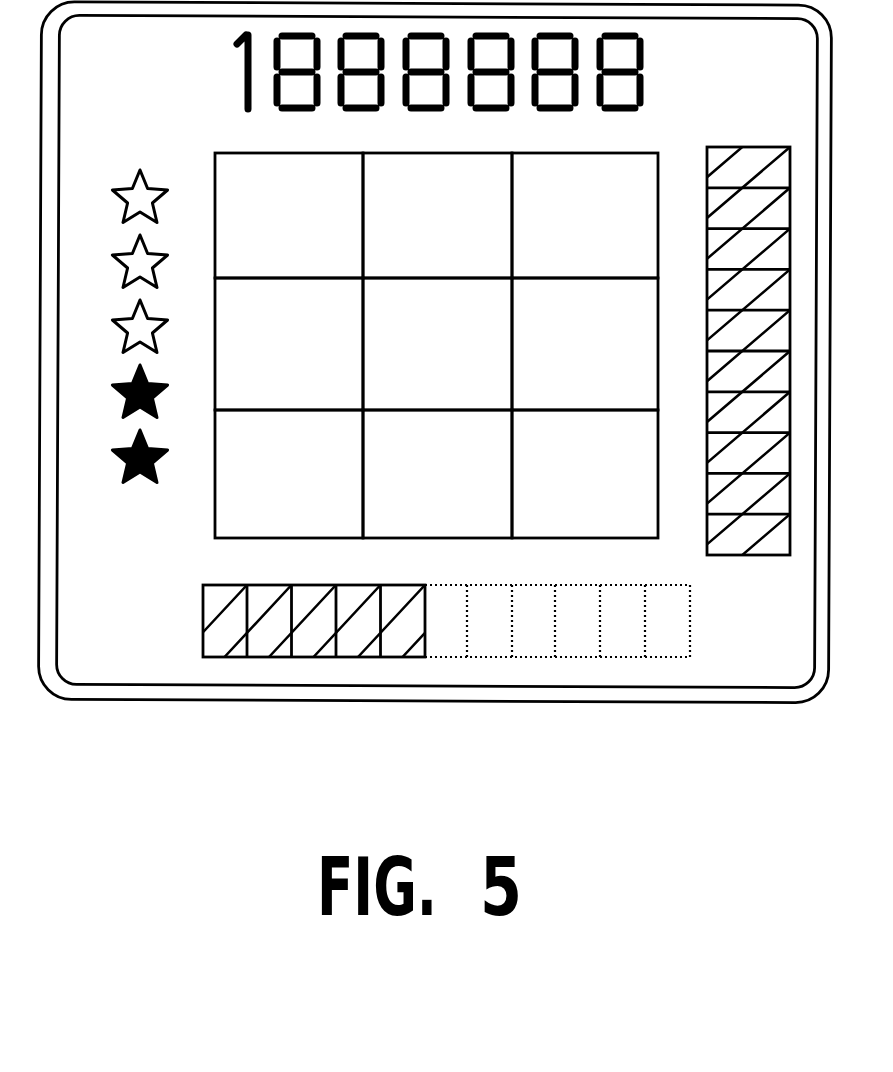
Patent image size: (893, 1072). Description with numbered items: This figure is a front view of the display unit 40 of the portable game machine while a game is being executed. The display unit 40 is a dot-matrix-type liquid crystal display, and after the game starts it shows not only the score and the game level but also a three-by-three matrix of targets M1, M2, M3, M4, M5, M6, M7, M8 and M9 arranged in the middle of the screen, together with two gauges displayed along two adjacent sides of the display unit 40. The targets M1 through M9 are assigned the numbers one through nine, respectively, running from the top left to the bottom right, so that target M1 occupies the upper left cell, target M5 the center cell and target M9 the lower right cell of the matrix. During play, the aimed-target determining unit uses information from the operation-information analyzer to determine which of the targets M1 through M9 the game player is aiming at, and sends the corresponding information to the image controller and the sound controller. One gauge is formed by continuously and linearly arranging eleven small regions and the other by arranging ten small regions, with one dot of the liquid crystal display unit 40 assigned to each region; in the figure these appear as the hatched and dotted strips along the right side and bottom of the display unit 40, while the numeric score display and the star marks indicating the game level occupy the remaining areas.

The display unit 40 is at (434, 392).
The target M1 is at (289, 215).
The target M2 is at (437, 215).
The target M3 is at (585, 215).
The target M4 is at (289, 344).
The target M5 is at (437, 344).
The target M6 is at (585, 344).
The target M7 is at (289, 474).
The target M8 is at (437, 474).
The target M9 is at (585, 474).